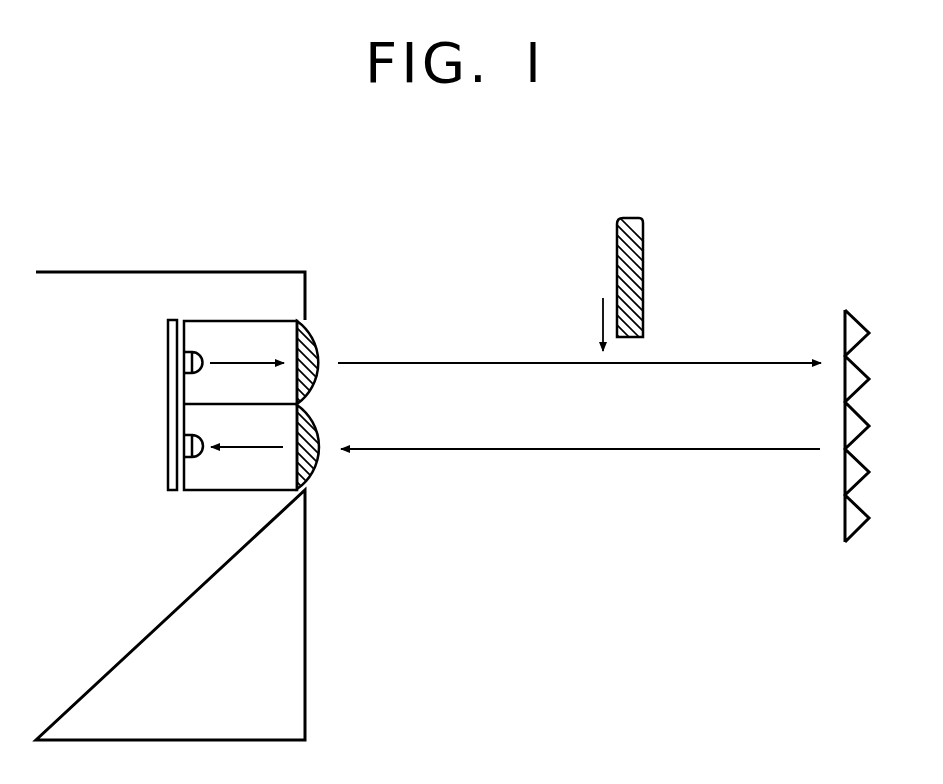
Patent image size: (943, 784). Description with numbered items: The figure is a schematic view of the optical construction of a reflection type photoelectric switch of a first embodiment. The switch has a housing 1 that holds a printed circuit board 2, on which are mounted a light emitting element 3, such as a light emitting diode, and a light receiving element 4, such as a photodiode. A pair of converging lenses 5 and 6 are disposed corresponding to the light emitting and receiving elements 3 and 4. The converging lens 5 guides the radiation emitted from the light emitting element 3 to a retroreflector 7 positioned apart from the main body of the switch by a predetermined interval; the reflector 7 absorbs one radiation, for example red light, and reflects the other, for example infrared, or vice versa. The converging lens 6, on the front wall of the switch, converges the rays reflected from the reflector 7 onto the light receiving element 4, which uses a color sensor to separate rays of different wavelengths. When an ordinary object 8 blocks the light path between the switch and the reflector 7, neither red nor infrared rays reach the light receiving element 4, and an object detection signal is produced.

The housing 1 is at (192, 272).
The printed circuit board 2 is at (167, 463).
The light emitting element 3 is at (197, 352).
The light receiving element 4 is at (193, 458).
The converging lens 5 is at (318, 343).
The converging lens 6 is at (314, 481).
The retroreflector 7 is at (845, 330).
The object 8 is at (644, 253).